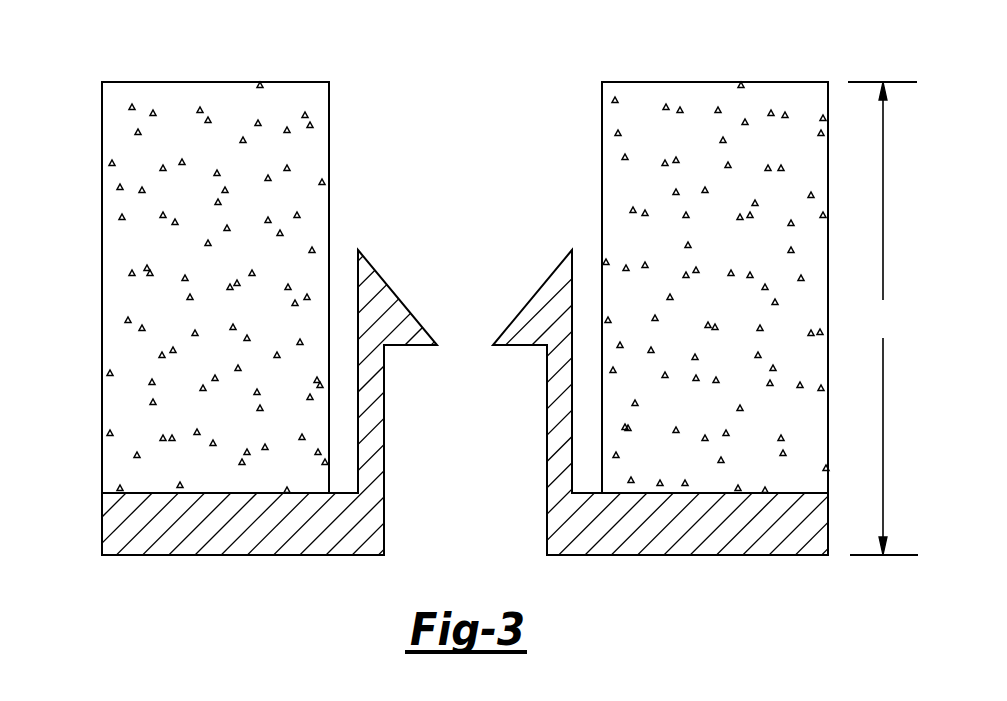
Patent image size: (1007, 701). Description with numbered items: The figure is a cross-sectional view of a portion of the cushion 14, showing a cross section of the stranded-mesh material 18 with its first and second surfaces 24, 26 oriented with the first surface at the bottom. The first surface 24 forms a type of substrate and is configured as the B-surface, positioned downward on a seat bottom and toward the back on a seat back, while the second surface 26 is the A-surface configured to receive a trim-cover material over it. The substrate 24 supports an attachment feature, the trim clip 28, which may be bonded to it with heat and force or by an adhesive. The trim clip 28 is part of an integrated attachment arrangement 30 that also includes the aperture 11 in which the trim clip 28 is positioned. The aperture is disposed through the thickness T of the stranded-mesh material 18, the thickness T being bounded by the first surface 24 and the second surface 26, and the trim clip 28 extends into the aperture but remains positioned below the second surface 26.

The aperture 11 is at (600, 166).
The cushion 14 is at (185, 65).
The stranded-mesh material 18 is at (102, 253).
The first surface 24 is at (748, 555).
The second surface 26 is at (290, 110).
The trim clip 28 is at (393, 292).
The integrated attachment arrangement 30 is at (473, 108).
The thickness T is at (883, 318).